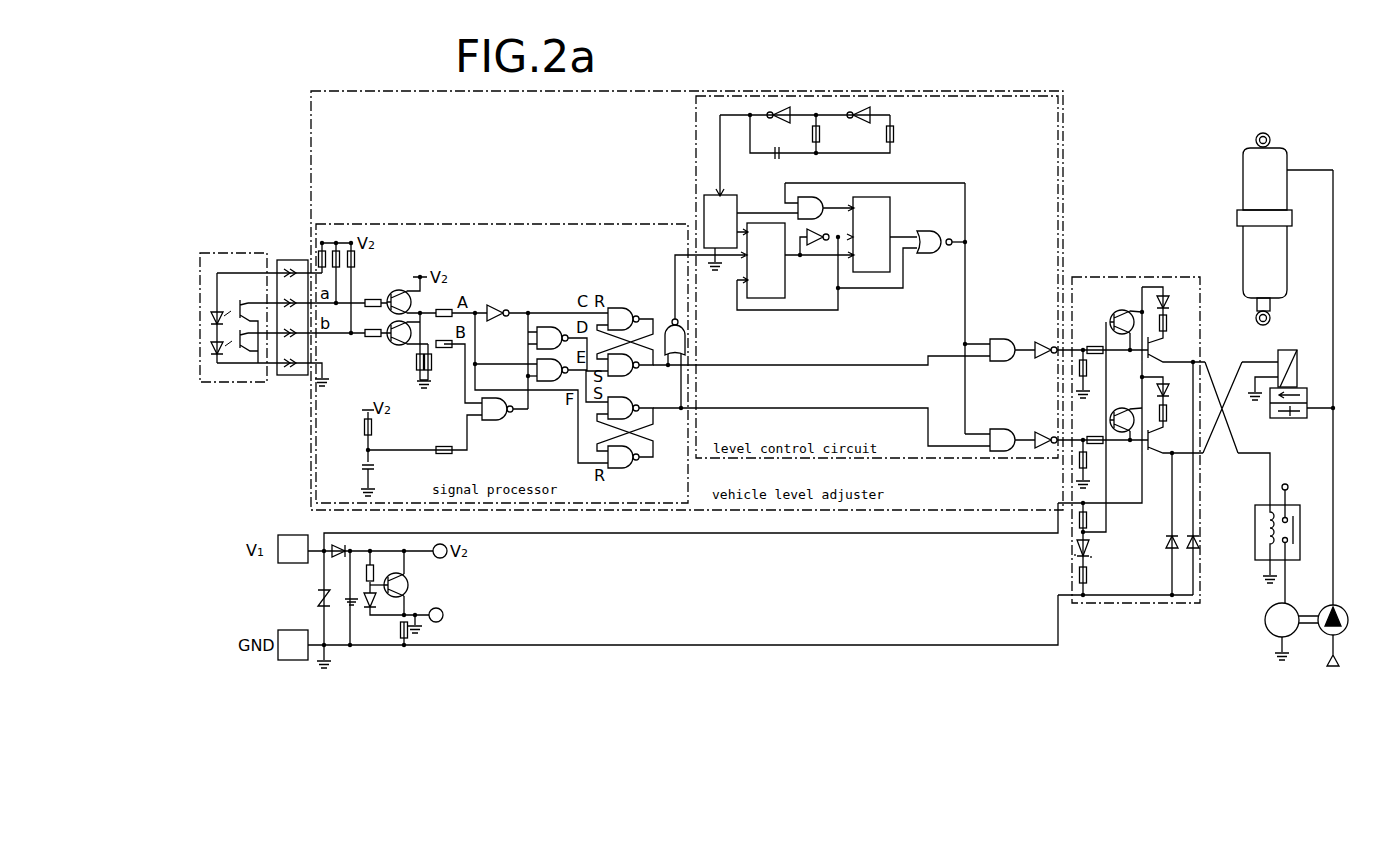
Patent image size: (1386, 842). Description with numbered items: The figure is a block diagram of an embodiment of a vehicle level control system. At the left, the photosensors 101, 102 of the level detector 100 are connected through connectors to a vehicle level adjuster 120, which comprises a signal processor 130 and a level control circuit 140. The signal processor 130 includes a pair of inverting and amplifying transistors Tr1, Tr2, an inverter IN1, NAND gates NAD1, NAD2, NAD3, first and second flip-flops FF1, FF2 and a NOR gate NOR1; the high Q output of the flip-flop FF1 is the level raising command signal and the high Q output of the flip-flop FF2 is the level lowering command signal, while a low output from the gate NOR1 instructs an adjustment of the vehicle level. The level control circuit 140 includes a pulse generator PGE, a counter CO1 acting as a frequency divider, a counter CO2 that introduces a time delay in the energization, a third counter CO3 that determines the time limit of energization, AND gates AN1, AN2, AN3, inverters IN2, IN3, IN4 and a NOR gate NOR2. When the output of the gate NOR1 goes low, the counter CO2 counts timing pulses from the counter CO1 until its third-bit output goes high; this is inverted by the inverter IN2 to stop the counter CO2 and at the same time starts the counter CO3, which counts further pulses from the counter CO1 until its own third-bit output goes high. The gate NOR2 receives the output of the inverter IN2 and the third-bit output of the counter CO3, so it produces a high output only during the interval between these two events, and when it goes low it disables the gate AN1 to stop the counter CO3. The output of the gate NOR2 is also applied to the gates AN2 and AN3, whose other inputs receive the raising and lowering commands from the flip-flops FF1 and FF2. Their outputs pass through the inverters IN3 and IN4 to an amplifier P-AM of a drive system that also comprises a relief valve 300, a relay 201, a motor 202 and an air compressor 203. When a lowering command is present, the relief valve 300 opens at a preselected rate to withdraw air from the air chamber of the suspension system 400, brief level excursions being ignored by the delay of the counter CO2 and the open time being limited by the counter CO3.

The level detector 100 is at (250, 253).
The photosensor 101 is at (236, 300).
The photosensor 102 is at (212, 316).
The vehicle level adjuster 120 is at (311, 174).
The signal processor 130 is at (486, 224).
The level control circuit 140 is at (696, 176).
The relay 201 is at (1255, 520).
The motor 202 is at (1266, 612).
The air compressor 203 is at (1348, 614).
The relief valve 300 is at (1298, 368).
The suspension system 400 is at (1243, 253).
The inverting and amplifying transistor Tr1 is at (398, 290).
The inverting and amplifying transistor Tr2 is at (405, 349).
The inverter IN1 is at (493, 306).
The inverter IN2 is at (812, 231).
The inverter IN3 is at (1043, 342).
The inverter IN4 is at (1043, 432).
The NAND gate NAD1 is at (505, 421).
The NAND gate NAD2 is at (537, 330).
The NAND gate NAD3 is at (555, 382).
The first flip-flop FF1 is at (624, 308).
The second flip-flop FF2 is at (626, 470).
The NOR gate NOR1 is at (690, 334).
The NOR gate NOR2 is at (934, 252).
The counter CO1 is at (726, 195).
The counter CO2 is at (786, 292).
The third counter CO3 is at (890, 220).
The AND gate AN1 is at (810, 197).
The AND gate AN2 is at (1003, 361).
The AND gate AN3 is at (1003, 451).
The pulse generator PGE is at (899, 131).
The amplifier P-AM is at (1078, 277).